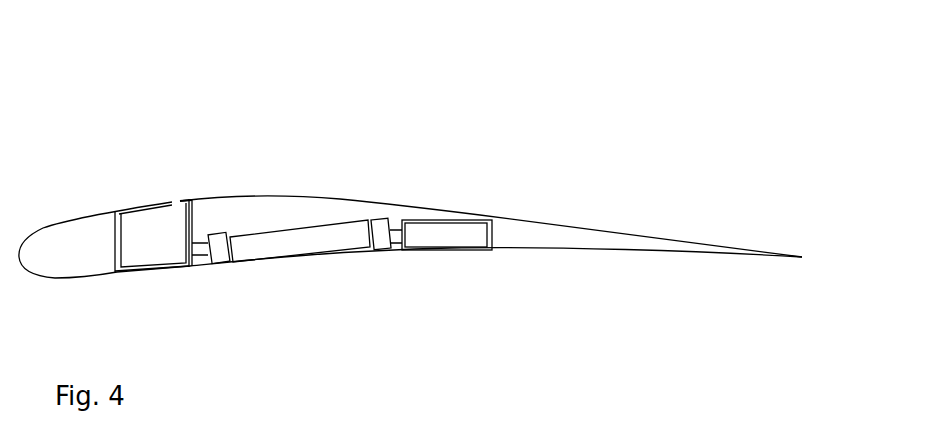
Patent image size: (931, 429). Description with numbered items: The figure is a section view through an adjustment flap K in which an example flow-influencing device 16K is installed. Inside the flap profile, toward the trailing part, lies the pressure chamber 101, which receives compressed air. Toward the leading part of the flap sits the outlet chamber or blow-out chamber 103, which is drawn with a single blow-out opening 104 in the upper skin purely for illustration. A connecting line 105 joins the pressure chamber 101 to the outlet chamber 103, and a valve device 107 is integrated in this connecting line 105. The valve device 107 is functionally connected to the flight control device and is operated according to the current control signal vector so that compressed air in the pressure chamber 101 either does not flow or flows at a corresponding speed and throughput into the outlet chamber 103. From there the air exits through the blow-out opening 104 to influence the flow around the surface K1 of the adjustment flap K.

The flow-influencing device 16K is at (133, 136).
The adjustment flap K is at (578, 233).
The surface of the adjustment flap K1 is at (365, 203).
The pressure chamber 101 is at (458, 240).
The outlet chamber 103 is at (145, 257).
The blow-out opening 104 is at (172, 200).
The connecting line 105 is at (200, 258).
The valve device 107 is at (265, 248).